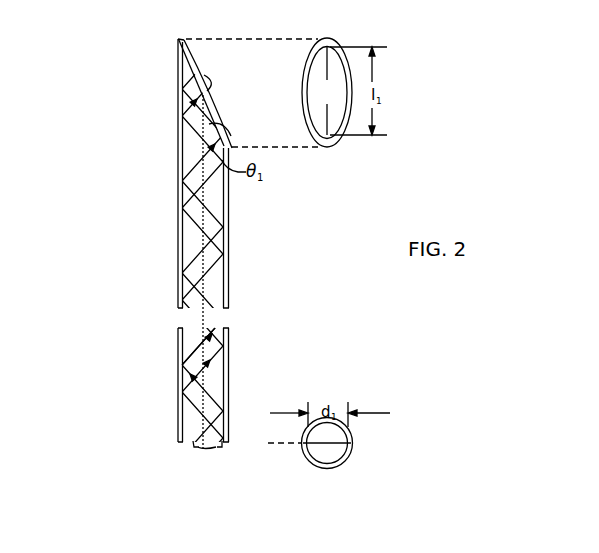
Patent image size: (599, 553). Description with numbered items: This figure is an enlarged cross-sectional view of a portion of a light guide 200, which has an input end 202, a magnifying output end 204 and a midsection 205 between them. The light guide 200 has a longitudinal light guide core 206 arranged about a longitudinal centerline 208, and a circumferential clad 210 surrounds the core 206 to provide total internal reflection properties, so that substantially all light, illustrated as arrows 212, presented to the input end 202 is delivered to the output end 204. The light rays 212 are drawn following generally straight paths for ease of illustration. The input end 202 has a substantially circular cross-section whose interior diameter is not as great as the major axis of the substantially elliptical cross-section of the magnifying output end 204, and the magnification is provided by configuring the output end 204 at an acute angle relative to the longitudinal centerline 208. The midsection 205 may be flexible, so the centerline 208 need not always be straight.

The light guide 200 is at (240, 222).
The input end 202 is at (184, 452).
The magnifying output end 204 is at (342, 101).
The midsection 205 is at (174, 150).
The light guide core 206 is at (216, 341).
The longitudinal centerline 208 is at (205, 318).
The circumferential clad 210 is at (178, 124).
The light rays 212 is at (208, 456).